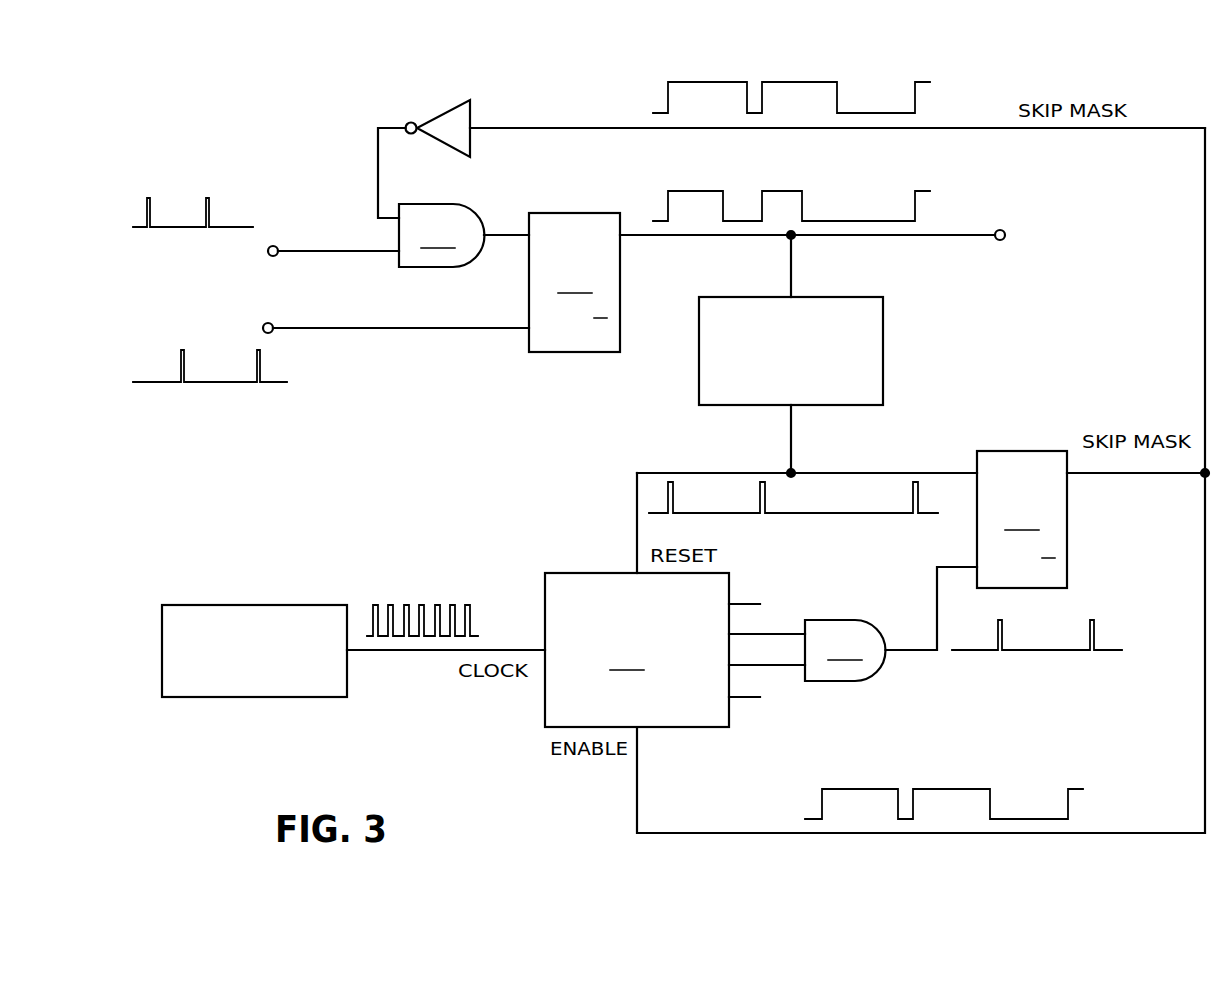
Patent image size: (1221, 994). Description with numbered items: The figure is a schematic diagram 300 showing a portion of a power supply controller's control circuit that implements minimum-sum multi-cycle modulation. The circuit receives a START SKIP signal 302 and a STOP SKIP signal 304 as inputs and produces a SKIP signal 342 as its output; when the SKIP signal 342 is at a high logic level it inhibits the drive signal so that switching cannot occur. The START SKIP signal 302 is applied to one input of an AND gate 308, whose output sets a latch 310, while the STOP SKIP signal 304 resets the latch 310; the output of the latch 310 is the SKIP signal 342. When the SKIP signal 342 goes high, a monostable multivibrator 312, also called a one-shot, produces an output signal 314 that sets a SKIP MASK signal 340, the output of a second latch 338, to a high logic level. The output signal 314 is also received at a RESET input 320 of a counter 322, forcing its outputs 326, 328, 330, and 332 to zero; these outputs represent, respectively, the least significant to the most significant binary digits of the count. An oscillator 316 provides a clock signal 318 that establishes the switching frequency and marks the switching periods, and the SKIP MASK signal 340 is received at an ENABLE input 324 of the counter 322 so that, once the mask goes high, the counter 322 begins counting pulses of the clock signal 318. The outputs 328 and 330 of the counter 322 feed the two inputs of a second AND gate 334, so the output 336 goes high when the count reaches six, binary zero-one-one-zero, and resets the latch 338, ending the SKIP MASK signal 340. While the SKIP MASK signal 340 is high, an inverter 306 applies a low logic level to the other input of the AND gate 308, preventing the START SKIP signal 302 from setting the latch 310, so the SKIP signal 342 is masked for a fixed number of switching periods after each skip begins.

The schematic diagram 300 is at (210, 114).
The START SKIP signal 302 is at (273, 243).
The STOP SKIP signal 304 is at (268, 320).
The inverter 306 is at (432, 113).
The AND gate 308 is at (441, 235).
The latch 310 is at (574, 282).
The monostable multivibrator 312 is at (893, 341).
The output signal 314 is at (797, 413).
The oscillator 316 is at (207, 600).
The clock signal 318 is at (530, 638).
The RESET input 320 is at (490, 228).
The counter 322 is at (637, 650).
The ENABLE input 324 is at (645, 743).
The output 326 is at (748, 593).
The output 328 is at (775, 628).
The output 330 is at (775, 677).
The output 332 is at (745, 707).
The AND gate 334 is at (845, 650).
The output 336 is at (913, 660).
The latch 338 is at (1022, 519).
The SKIP MASK signal 340 is at (1117, 480).
The SKIP signal 342 is at (998, 224).